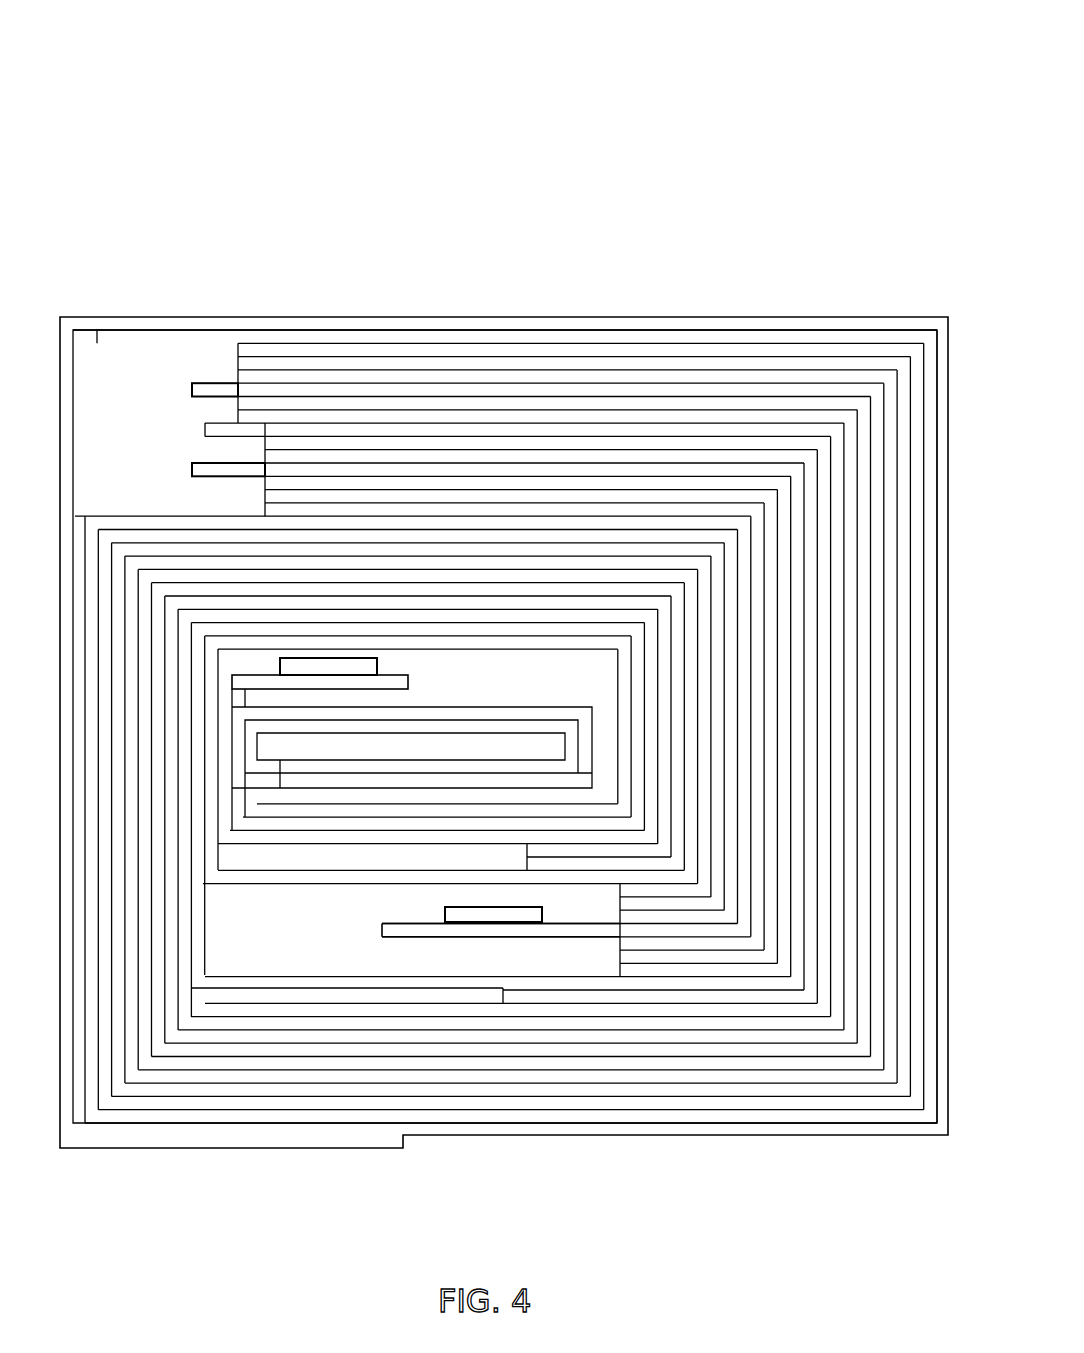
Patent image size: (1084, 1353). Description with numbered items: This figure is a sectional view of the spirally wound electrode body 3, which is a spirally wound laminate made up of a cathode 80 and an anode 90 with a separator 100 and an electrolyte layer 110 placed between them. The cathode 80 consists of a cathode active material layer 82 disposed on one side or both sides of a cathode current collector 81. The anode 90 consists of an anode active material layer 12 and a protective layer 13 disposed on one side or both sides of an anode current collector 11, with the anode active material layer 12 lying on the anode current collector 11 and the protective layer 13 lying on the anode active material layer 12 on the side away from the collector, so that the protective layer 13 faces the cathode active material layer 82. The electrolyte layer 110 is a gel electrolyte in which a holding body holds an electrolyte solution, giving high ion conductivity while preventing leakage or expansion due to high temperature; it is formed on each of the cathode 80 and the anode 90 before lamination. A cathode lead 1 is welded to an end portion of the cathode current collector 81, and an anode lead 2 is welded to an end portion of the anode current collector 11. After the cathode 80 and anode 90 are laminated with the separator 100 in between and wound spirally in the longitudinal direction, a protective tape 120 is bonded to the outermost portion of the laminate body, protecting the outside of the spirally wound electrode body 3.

The cathode lead 1 is at (300, 668).
The anode lead 2 is at (485, 913).
The spirally wound electrode body 3 is at (505, 603).
The anode current collector 11 is at (467, 337).
The anode active material layer 12 is at (555, 510).
The protective layer 13 is at (613, 497).
The cathode 80 is at (279, 295).
The cathode current collector 81 is at (213, 430).
The cathode active material layer 82 is at (352, 445).
The anode 90 is at (505, 613).
The separator 100 is at (712, 390).
The electrolyte layer 110 is at (781, 482).
The protective tape 120 is at (912, 316).